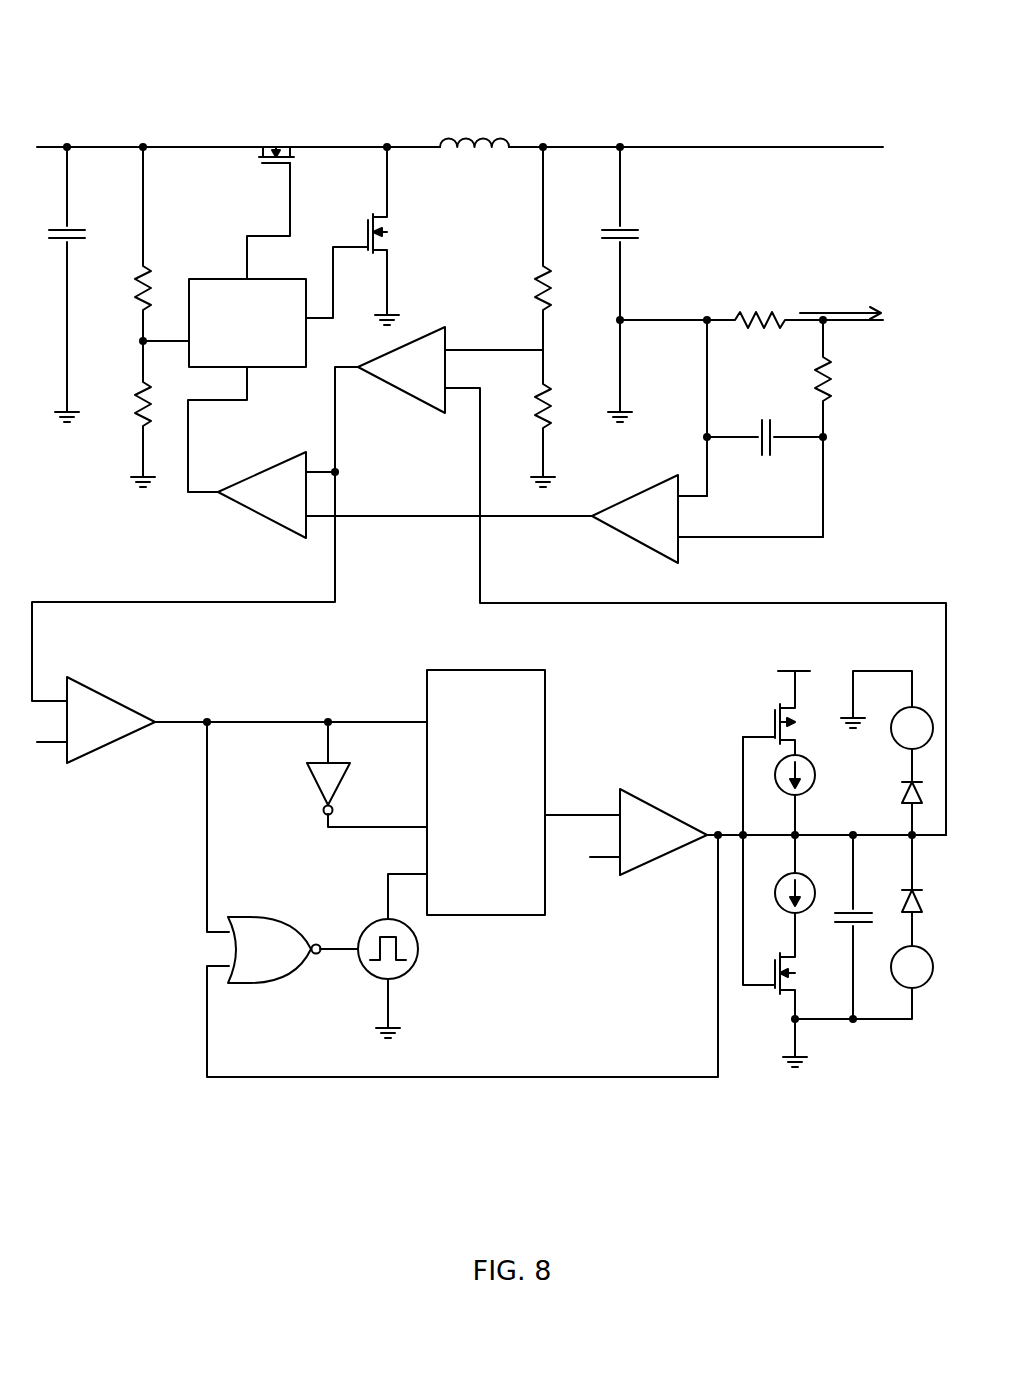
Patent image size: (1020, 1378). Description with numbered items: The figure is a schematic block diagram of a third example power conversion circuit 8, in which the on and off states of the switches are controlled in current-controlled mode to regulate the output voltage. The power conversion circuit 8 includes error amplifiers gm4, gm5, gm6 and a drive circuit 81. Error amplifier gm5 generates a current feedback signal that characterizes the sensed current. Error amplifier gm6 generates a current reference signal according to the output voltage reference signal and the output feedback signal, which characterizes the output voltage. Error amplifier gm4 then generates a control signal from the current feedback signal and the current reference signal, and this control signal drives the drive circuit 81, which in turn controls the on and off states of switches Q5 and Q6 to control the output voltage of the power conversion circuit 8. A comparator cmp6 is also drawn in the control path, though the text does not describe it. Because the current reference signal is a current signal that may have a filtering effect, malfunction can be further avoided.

The power conversion circuit 8 is at (459, 110).
The drive circuit 81 is at (218, 278).
The switch Q5 is at (276, 141).
The switch Q6 is at (396, 231).
The error amplifier gm4 is at (262, 495).
The error amplifier gm5 is at (635, 519).
The error amplifier gm6 is at (401, 370).
The comparator cmp6 is at (111, 720).